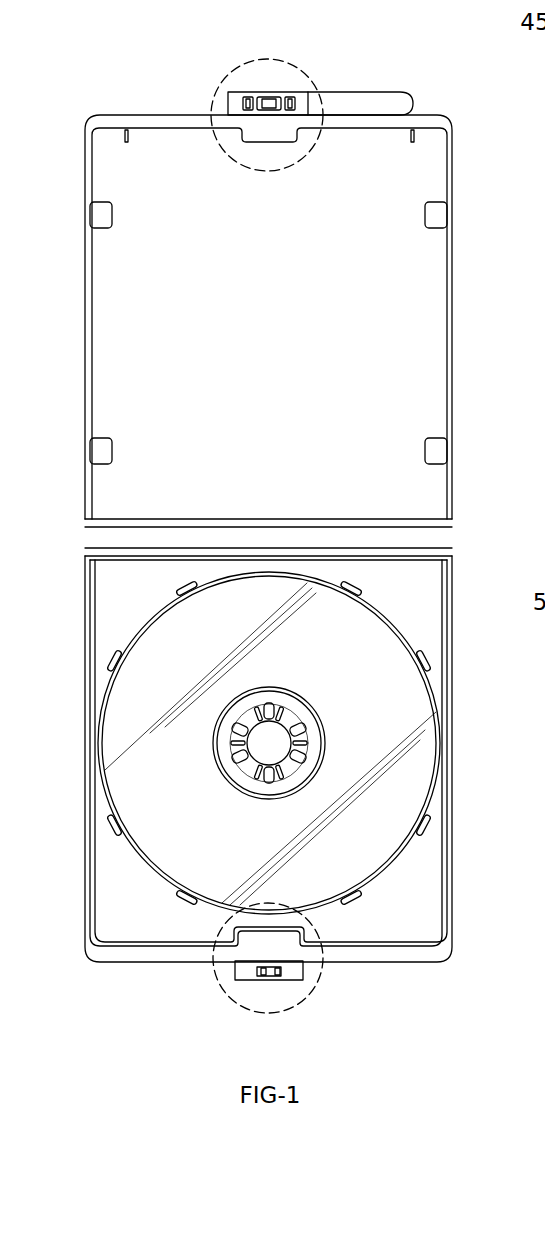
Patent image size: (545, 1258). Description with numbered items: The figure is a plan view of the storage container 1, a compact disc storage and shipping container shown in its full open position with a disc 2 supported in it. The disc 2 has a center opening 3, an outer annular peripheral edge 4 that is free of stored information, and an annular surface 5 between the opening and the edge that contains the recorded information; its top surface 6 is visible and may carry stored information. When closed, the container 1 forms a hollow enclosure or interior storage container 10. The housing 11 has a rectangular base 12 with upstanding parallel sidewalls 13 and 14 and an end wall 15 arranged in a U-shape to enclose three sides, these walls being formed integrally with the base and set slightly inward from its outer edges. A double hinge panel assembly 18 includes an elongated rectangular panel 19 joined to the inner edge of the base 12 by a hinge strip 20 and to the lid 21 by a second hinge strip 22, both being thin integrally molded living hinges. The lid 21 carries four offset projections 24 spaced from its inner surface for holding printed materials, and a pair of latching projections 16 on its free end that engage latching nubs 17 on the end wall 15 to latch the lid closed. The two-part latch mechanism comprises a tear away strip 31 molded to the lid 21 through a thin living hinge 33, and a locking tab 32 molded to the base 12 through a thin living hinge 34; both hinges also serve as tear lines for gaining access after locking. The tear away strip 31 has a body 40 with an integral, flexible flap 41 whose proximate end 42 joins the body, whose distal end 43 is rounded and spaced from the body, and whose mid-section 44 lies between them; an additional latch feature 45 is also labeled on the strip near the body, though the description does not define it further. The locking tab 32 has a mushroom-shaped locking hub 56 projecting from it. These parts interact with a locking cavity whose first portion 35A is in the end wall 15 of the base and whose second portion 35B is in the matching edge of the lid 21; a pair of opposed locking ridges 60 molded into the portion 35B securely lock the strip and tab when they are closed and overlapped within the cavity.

The storage container 1 is at (155, 78).
The disc 2 is at (297, 743).
The center opening 3 is at (284, 742).
The outer annular peripheral edge 4 is at (410, 645).
The annular surface 5 is at (365, 835).
The top surface 6 is at (410, 760).
The interior storage container 10 is at (415, 890).
The housing 11 is at (460, 368).
The base 12 is at (420, 962).
The sidewall 13 is at (450, 838).
The sidewall 14 is at (87, 632).
The end wall 15 is at (180, 950).
The latching projections 16 is at (144, 125).
The latching nubs 17 is at (145, 952).
The double hinge panel assembly 18 is at (455, 540).
The panel 19 is at (272, 538).
The hinge strip 20 is at (205, 555).
The lid 21 is at (442, 322).
The second hinge strip 22 is at (337, 527).
The offset projections 24 is at (106, 216).
The tear away strip 31 is at (335, 85).
The locking tab 32 is at (242, 990).
The living hinge 33 is at (243, 125).
The living hinge 34 is at (290, 963).
The first cavity portion 35A is at (283, 940).
The second cavity portion 35B is at (265, 131).
The body 40 is at (243, 89).
The flap 41 is at (388, 95).
The proximate end 42 is at (315, 103).
The distal end 43 is at (402, 102).
The mid-section 44 is at (366, 104).
The latch end 45 is at (232, 102).
The locking hub 56 is at (270, 979).
The locking ridges 60 is at (284, 135).